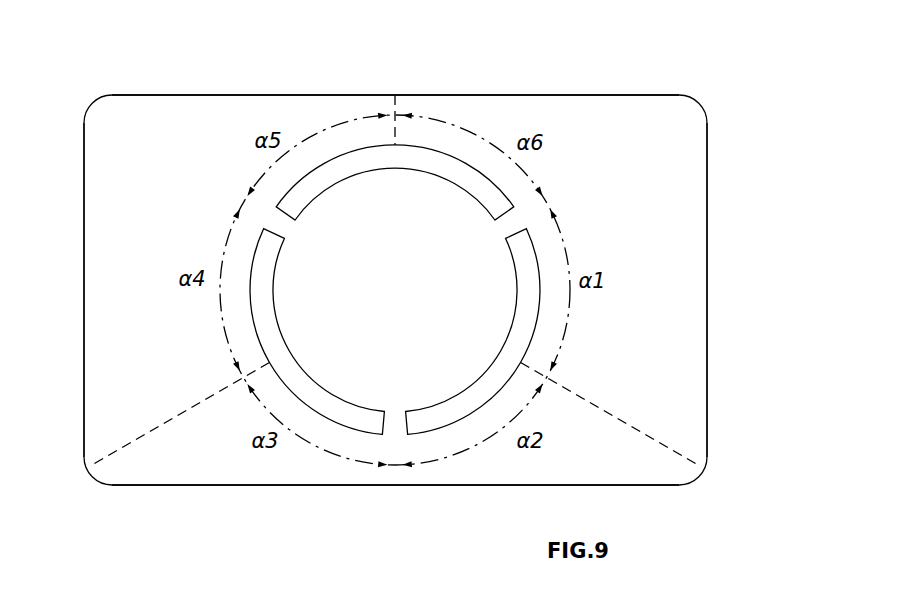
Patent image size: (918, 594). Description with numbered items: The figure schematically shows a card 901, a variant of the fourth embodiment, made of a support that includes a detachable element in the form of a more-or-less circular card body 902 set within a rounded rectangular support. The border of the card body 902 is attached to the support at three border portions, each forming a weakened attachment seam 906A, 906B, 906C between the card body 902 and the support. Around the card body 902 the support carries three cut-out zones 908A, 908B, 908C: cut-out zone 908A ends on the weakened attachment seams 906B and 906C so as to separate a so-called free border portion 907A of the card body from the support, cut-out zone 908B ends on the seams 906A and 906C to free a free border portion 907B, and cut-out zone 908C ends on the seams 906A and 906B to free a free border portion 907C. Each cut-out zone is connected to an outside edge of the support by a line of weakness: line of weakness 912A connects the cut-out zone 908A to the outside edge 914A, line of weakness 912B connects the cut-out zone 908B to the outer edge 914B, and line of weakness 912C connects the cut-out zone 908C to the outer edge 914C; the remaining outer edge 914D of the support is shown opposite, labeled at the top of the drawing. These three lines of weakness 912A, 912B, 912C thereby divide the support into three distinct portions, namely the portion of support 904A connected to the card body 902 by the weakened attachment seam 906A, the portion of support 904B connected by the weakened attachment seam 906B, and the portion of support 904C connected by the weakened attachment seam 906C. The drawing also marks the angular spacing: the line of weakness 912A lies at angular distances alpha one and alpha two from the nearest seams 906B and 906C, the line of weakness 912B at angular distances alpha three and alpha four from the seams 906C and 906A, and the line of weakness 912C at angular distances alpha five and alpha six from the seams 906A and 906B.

The card 901 is at (712, 205).
The card body 902 is at (377, 320).
The portion of support 904A is at (122, 195).
The portion of support 904B is at (622, 228).
The portion of support 904C is at (177, 458).
The weakened attachment seam 906A is at (283, 233).
The weakened attachment seam 906B is at (507, 233).
The weakened attachment seam 906C is at (389, 412).
The free border portion 907A is at (450, 402).
The free border portion 907B is at (333, 402).
The free border portion 907C is at (473, 195).
The cut-out zone 908A is at (478, 390).
The cut-out zone 908B is at (273, 342).
The cut-out zone 908C is at (447, 172).
The line of weakness 912A is at (618, 419).
The line of weakness 912B is at (172, 419).
The line of weakness 912C is at (396, 100).
The outside edge 914A is at (707, 405).
The outer edge 914B is at (84, 427).
The outer edge 914C is at (295, 486).
The top side wall 914D is at (295, 94).